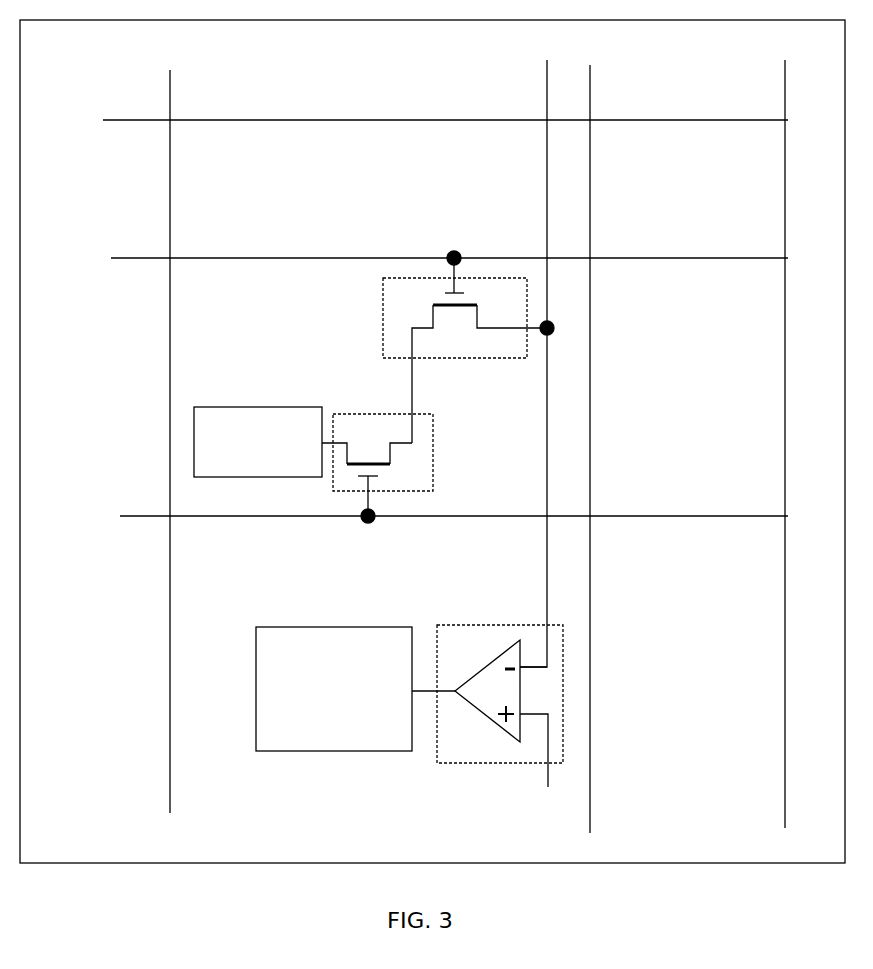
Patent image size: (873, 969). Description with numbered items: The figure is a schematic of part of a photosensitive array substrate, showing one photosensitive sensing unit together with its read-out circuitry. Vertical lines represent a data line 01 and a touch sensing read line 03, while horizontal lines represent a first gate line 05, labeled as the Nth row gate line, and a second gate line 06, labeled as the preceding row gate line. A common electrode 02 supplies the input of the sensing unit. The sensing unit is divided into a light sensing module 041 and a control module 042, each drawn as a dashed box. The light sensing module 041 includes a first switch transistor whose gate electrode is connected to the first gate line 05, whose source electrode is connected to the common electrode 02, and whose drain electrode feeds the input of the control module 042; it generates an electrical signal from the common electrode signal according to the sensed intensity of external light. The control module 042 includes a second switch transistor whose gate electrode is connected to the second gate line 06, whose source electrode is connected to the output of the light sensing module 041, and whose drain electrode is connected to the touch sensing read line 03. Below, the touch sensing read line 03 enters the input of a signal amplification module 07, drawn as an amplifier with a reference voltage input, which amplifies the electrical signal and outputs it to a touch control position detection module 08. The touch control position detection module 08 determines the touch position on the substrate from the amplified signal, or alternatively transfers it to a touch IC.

The data line 01 is at (590, 95).
The common electrode 02 is at (256, 407).
The touch sensing read line 03 is at (547, 95).
The light sensing module 041 is at (433, 467).
The control module 042 is at (485, 278).
The first gate line 05 is at (150, 516).
The second gate line 06 is at (148, 258).
The signal amplification module 07 is at (477, 763).
The touch control position detection module 08 is at (340, 752).